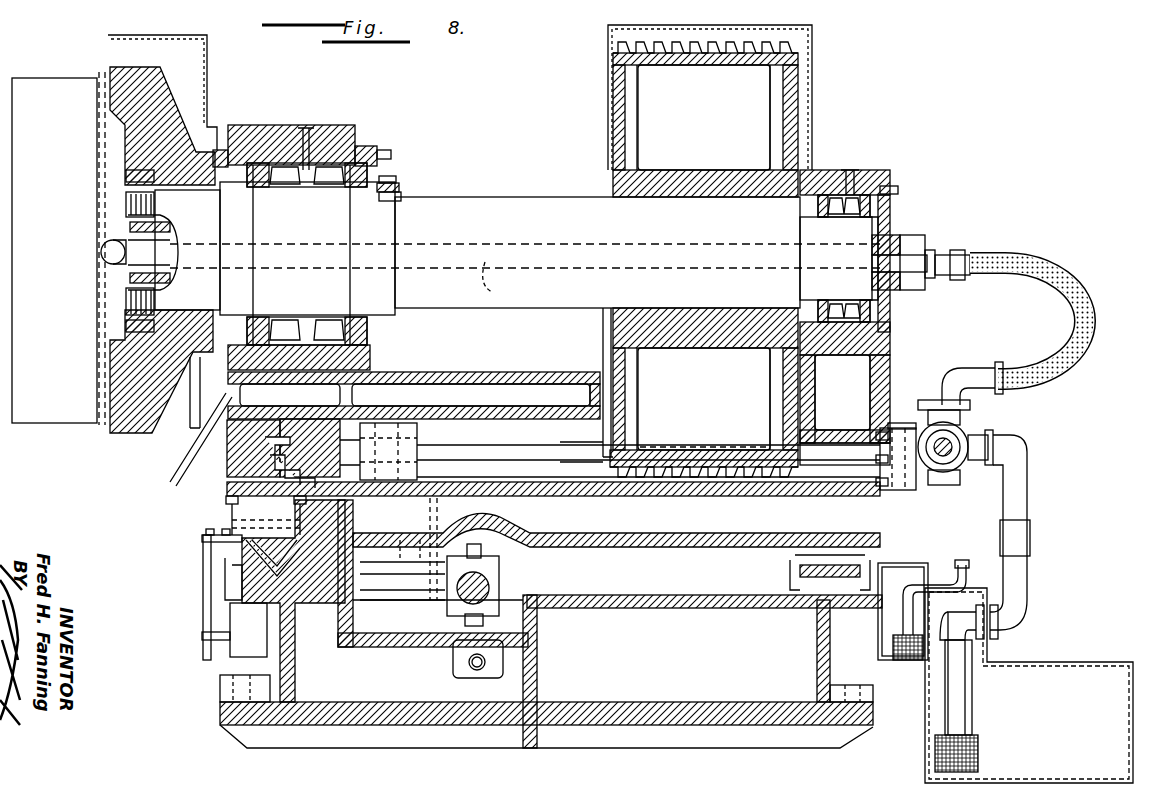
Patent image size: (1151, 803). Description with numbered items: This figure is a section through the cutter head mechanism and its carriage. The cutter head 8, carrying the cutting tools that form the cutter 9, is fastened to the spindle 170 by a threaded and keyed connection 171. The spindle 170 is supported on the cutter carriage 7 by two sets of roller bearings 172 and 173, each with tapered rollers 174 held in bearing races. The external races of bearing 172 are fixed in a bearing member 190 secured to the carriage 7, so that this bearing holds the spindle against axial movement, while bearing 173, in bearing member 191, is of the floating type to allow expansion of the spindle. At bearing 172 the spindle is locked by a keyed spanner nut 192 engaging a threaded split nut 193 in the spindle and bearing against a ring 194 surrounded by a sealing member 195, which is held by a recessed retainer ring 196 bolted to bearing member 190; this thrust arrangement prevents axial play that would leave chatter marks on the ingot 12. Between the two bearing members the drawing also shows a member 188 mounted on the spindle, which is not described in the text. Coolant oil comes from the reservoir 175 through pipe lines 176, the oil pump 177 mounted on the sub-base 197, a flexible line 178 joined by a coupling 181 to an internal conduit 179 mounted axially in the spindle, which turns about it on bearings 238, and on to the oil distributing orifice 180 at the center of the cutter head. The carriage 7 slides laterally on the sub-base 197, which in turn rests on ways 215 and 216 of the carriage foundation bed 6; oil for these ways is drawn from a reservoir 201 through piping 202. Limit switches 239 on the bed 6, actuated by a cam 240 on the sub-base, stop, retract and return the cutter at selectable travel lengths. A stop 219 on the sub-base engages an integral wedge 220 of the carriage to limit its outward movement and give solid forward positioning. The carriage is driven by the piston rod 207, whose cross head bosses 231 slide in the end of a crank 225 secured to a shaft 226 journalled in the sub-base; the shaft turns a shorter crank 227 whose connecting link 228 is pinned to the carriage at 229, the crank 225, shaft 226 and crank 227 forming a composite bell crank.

The carriage foundation bed 6 is at (634, 678).
The cutter carriage 7 is at (500, 402).
The cutter head 8 is at (140, 82).
The cutter 9 is at (100, 76).
The ingot 12 is at (42, 254).
The spindle 170 is at (520, 228).
The threaded and keyed connection 171 is at (128, 198).
The roller bearing 172 is at (314, 160).
The roller bearing 173 is at (856, 190).
The tapered rollers 174 is at (322, 184).
The reservoir 175 is at (1028, 668).
The pipe lines 176 is at (1015, 522).
The oil pump 177 is at (958, 437).
The flexible line 178 is at (1070, 313).
The internal conduit 179 is at (503, 281).
The oil distributing orifice 180 is at (104, 262).
The coupling 181 is at (926, 246).
The pulley 188 is at (720, 130).
The bearing member 190 is at (278, 128).
The bearing member 191 is at (830, 170).
The keyed spanner nut 192 is at (394, 186).
The threaded split nut 193 is at (396, 197).
The ring 194 is at (386, 150).
The sealing member 195 is at (390, 177).
The recessed retainer ring 196 is at (362, 148).
The sub-base 197 is at (556, 524).
The reservoir 201 is at (900, 576).
The piping 202 is at (966, 576).
The piston rod 207 is at (492, 588).
The way 215 is at (222, 578).
The way 216 is at (796, 581).
The stop 219 is at (228, 455).
The wedge 220 is at (284, 452).
The crank 225 is at (500, 560).
The shaft 226 is at (386, 612).
The crank 227 is at (424, 446).
The connecting link 228 is at (547, 458).
The pin connection 229 is at (900, 426).
The bosses 231 is at (478, 540).
The bearings 238 is at (152, 238).
The limit switches 239 is at (207, 635).
The cam 240 is at (212, 592).